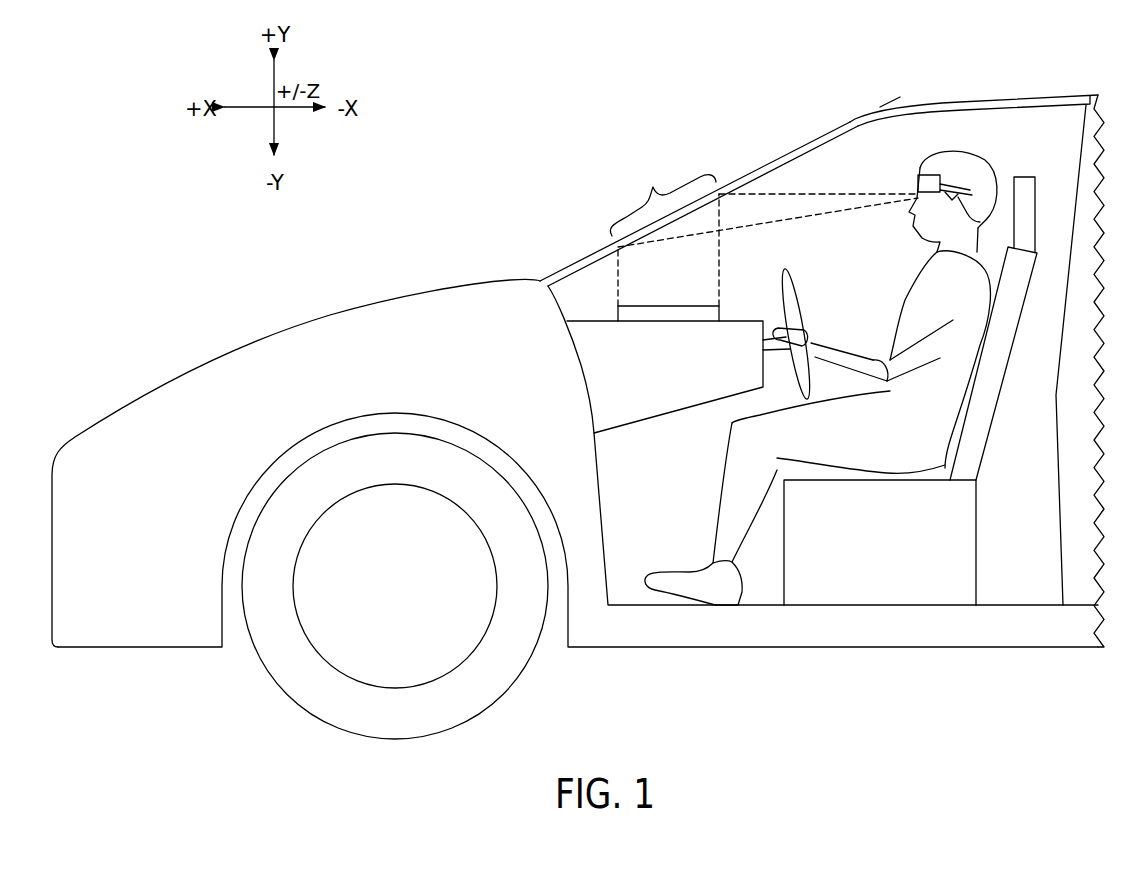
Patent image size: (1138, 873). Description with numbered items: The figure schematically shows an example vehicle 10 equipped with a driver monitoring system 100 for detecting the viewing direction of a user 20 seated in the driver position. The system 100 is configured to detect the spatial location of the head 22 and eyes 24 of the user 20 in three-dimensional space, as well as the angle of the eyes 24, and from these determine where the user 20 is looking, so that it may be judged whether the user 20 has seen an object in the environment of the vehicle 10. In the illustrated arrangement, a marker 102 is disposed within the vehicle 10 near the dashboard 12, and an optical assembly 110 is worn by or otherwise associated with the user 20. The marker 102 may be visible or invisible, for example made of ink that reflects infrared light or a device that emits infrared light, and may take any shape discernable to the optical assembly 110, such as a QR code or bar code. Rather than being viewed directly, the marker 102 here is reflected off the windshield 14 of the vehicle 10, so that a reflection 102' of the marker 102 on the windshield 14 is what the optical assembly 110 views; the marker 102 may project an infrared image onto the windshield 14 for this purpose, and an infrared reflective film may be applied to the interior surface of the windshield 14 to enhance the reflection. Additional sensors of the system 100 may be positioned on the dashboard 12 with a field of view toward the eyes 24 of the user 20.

The vehicle 10 is at (578, 396).
The system 100 is at (636, 193).
The marker 102 is at (668, 285).
The reflection of the marker 102' is at (764, 198).
The dashboard 12 is at (582, 318).
The windshield 14 is at (742, 170).
The user 20 is at (974, 91).
The head 22 is at (994, 170).
The eye 24 is at (918, 176).
The optical assembly 110 is at (884, 107).